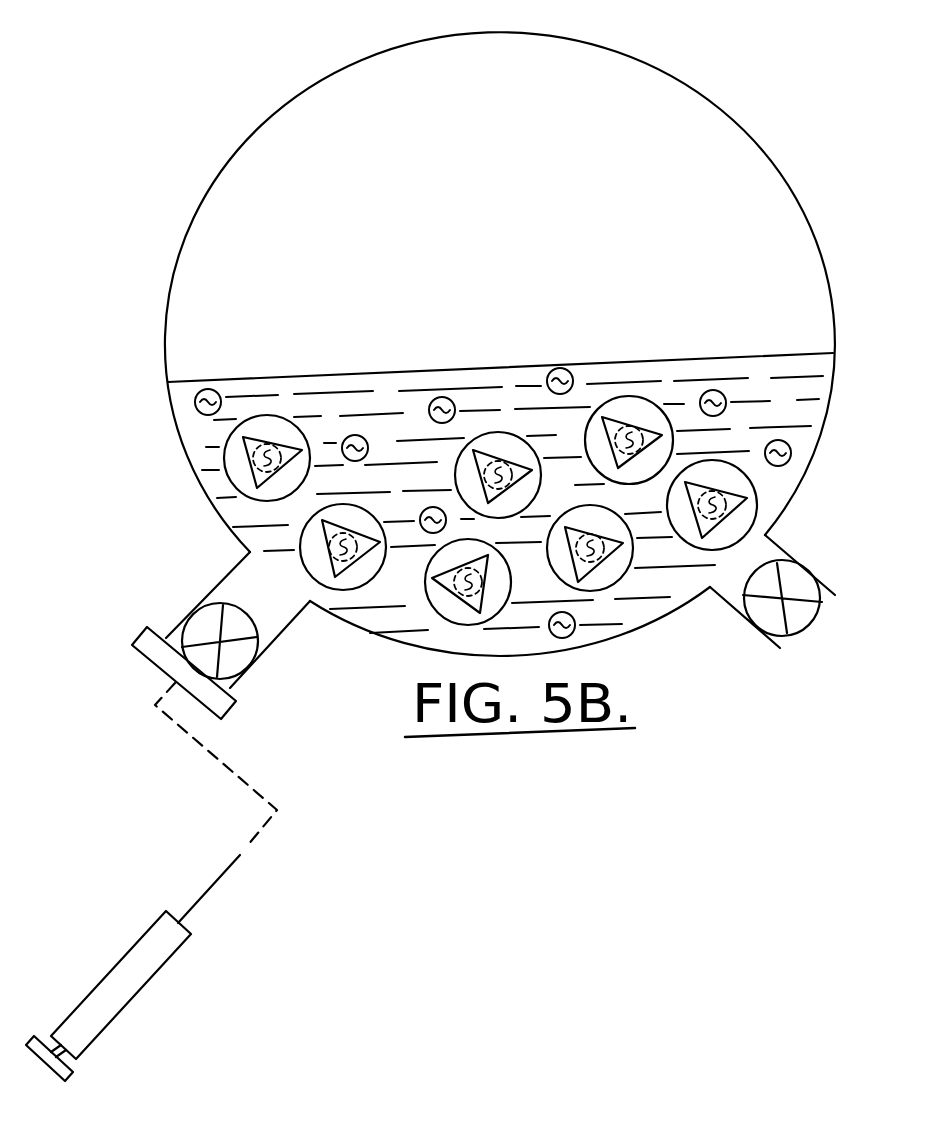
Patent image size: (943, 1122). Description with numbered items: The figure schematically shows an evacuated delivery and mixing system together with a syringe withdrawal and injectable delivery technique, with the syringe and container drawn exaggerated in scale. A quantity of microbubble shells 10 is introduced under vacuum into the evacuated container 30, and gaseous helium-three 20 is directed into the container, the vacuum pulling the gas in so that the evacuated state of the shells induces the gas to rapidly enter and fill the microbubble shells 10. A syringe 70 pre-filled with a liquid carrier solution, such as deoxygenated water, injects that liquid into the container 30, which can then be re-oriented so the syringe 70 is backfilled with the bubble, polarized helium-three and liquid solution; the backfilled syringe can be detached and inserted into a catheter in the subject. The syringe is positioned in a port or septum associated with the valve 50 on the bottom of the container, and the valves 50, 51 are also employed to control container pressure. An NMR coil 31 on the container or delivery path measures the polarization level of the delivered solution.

The microbubble shells 10 is at (232, 483).
The gaseous 3He 20 is at (443, 396).
The container 30 is at (500, 360).
The NMR coil 31 is at (143, 630).
The valve 50 is at (203, 617).
The valve 51 is at (803, 609).
The syringe 70 is at (133, 968).